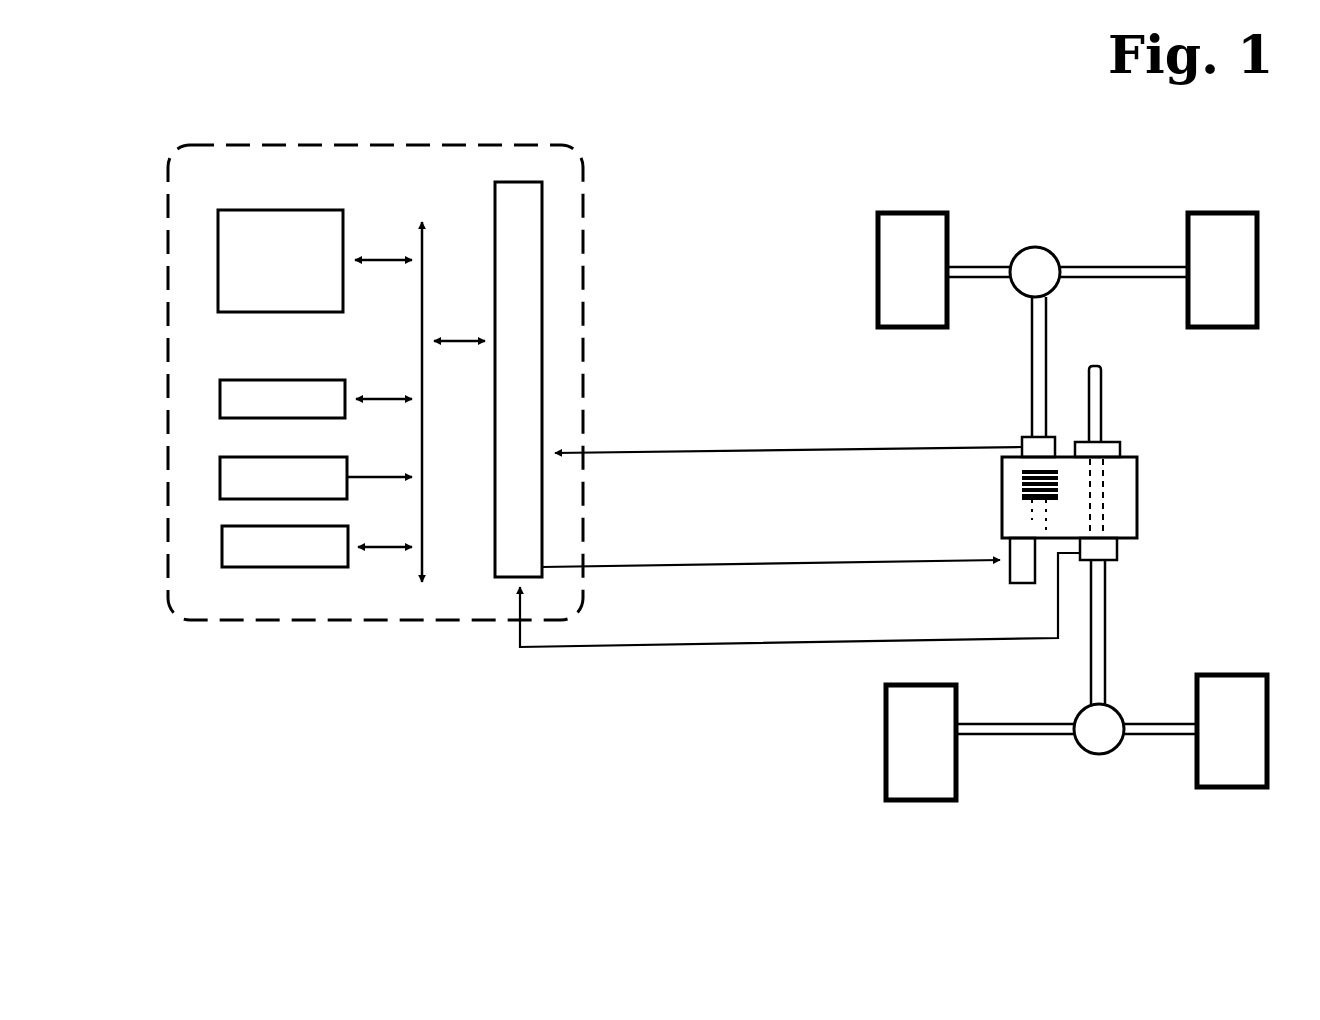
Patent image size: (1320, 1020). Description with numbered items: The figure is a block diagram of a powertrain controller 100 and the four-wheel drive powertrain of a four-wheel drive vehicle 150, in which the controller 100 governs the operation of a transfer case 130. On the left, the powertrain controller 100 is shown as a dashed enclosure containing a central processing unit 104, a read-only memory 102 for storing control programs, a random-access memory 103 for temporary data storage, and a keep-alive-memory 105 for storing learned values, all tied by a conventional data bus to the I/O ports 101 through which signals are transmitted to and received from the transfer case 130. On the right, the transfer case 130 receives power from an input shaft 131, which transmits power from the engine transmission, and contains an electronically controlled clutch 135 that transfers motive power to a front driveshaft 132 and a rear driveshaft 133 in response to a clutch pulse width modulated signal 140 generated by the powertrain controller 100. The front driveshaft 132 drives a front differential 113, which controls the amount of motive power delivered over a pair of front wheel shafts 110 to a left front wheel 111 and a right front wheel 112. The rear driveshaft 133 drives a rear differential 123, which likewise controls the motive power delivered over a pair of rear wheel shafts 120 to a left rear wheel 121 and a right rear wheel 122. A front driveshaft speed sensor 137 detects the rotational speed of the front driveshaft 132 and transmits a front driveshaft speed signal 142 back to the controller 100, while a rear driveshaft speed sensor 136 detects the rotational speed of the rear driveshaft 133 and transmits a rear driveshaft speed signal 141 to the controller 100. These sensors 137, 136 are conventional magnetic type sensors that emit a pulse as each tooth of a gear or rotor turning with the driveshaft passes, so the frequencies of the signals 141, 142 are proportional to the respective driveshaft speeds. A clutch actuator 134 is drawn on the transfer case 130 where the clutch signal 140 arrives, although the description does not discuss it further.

The powertrain controller 100 is at (583, 300).
The data bus and I/O ports 101 is at (484, 230).
The read-only memory (ROM) 102 is at (214, 476).
The random-access memory (RAM) 103 is at (212, 398).
The central processing unit 104 is at (212, 234).
The keep-alive-memory (KAM) 105 is at (216, 548).
The front axle 110 is at (1101, 265).
The left front wheel 111 is at (874, 250).
The right front wheel 112 is at (1186, 225).
The front differential 113 is at (1012, 254).
The rear axle 120 is at (990, 738).
The left rear wheel 121 is at (905, 805).
The right rear wheel 122 is at (1258, 790).
The rear differential 123 is at (1108, 753).
The transfer case 130 is at (1139, 485).
The input shaft 131 is at (1106, 396).
The front driveshaft 132 is at (1027, 383).
The rear driveshaft 133 is at (1108, 627).
The clutch actuator 134 is at (1020, 583).
The electronically controlled clutch 135 is at (1012, 490).
The rear driveshaft speed sensor 136 is at (1120, 562).
The front driveshaft speed sensor 137 is at (1020, 436).
The clutch Pulse Width Modulated (PWM) signal 140 is at (730, 564).
The rear driveshaft speed signal 141 is at (672, 648).
The front driveshaft speed signal 142 is at (775, 448).
The four-wheel drive vehicle 150 is at (765, 790).